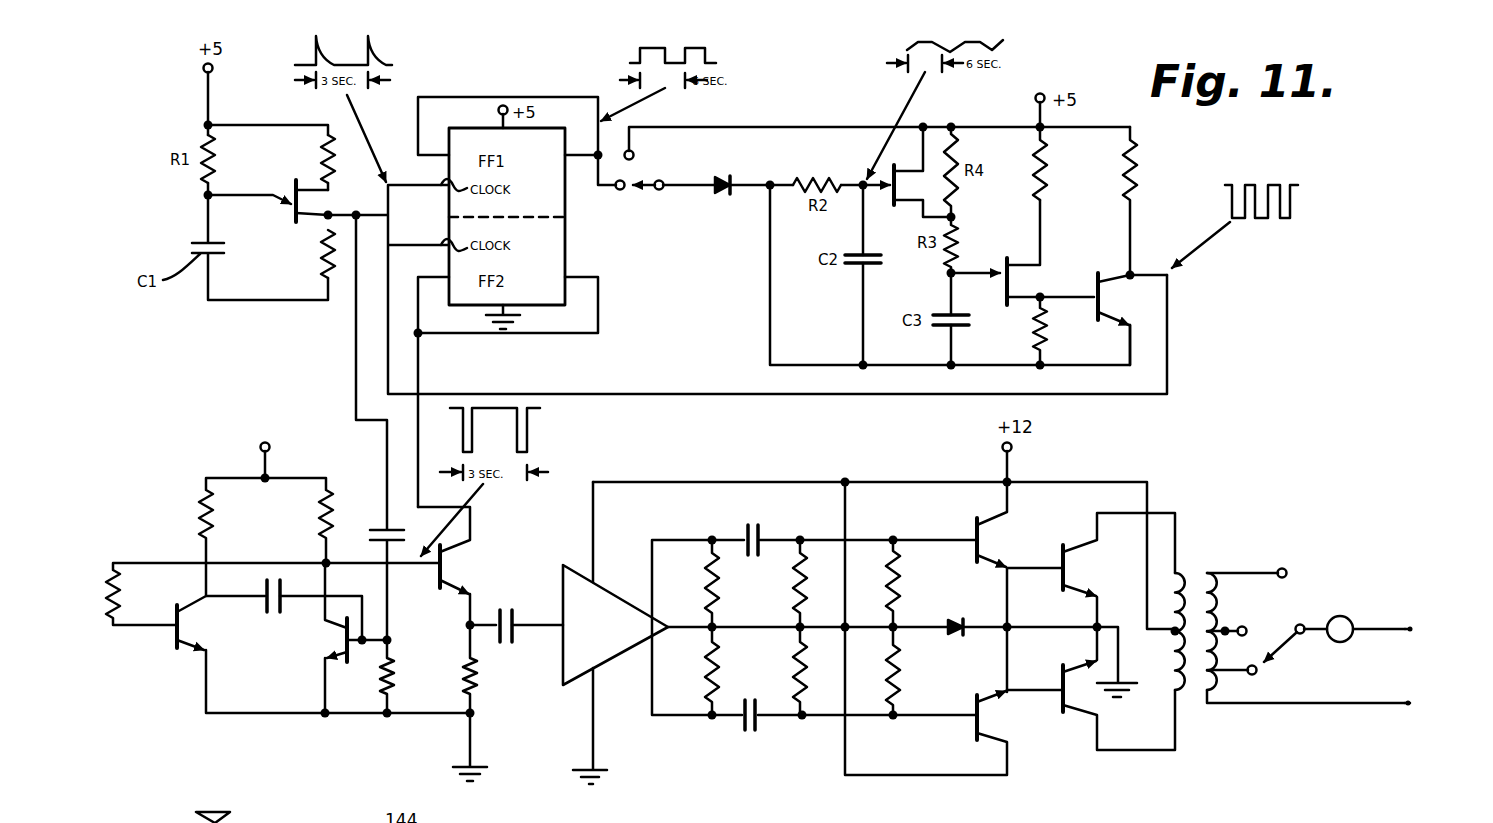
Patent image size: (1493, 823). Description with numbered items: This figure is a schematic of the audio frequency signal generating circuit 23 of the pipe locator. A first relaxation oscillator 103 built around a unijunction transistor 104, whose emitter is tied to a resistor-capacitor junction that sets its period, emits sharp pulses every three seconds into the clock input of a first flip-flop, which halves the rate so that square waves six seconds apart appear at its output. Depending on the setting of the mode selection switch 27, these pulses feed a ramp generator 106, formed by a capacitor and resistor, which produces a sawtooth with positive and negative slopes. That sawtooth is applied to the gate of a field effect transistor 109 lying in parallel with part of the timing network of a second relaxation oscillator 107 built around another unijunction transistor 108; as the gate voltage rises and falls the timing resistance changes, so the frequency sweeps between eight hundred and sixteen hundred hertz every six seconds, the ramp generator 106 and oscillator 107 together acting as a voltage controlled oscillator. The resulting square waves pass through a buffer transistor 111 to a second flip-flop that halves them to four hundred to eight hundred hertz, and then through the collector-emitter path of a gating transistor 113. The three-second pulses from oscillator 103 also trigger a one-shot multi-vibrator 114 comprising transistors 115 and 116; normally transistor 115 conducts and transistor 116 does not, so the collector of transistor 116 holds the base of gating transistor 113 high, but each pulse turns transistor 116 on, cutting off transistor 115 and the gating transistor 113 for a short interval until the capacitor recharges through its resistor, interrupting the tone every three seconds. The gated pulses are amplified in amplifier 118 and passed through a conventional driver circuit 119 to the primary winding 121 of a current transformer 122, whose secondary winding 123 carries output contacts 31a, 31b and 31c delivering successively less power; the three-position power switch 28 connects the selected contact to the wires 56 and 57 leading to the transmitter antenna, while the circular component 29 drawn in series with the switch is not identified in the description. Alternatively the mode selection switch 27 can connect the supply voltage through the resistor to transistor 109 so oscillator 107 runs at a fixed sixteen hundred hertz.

The audio frequency signal generating circuit 23 is at (570, 216).
The mode selection switch 27 is at (660, 181).
The three-position power switch 28 is at (1288, 642).
The motor 29 is at (1350, 617).
The output contact 31a is at (1287, 567).
The output contact 31b is at (1247, 626).
The output contact 31c is at (1258, 672).
The wire 56 is at (1400, 632).
The wire 57 is at (1338, 706).
The first relaxation oscillator 103 is at (274, 227).
The UJT 104 is at (295, 182).
The ramp generator 106 is at (832, 285).
The second relaxation oscillator 107 is at (986, 312).
The UJT 108 is at (1005, 258).
The field effect transistor 109 is at (893, 203).
The buffer transistor 111 is at (1096, 275).
The gating transistor 113 is at (470, 563).
The one shot multi-vibrator 114 is at (256, 656).
The transistor 115 is at (175, 645).
The transistor 116 is at (354, 658).
The amplifier 118 is at (568, 663).
The driver circuit 119 is at (832, 730).
The primary winding 121 is at (1183, 668).
The current transformer 122 is at (1195, 619).
The secondary winding 123 is at (1222, 612).